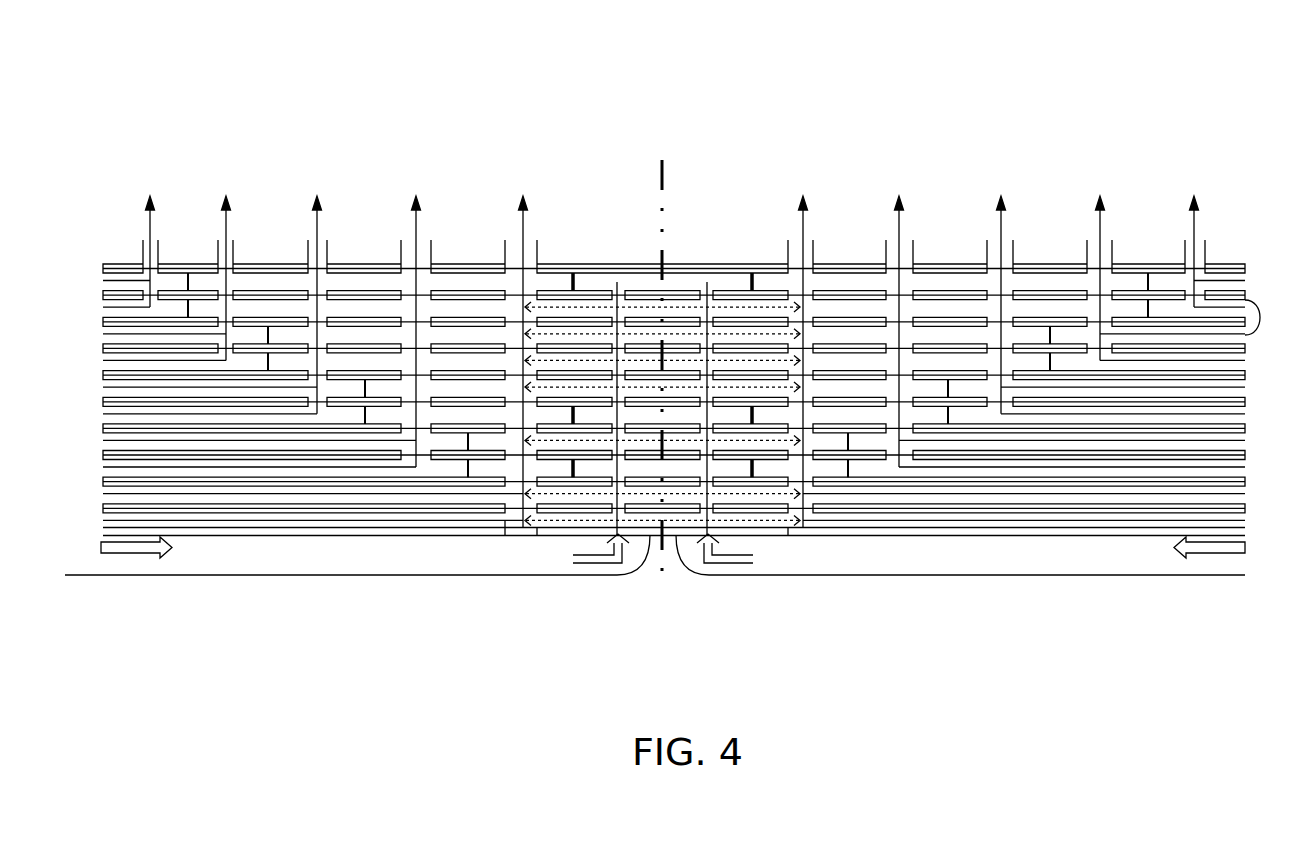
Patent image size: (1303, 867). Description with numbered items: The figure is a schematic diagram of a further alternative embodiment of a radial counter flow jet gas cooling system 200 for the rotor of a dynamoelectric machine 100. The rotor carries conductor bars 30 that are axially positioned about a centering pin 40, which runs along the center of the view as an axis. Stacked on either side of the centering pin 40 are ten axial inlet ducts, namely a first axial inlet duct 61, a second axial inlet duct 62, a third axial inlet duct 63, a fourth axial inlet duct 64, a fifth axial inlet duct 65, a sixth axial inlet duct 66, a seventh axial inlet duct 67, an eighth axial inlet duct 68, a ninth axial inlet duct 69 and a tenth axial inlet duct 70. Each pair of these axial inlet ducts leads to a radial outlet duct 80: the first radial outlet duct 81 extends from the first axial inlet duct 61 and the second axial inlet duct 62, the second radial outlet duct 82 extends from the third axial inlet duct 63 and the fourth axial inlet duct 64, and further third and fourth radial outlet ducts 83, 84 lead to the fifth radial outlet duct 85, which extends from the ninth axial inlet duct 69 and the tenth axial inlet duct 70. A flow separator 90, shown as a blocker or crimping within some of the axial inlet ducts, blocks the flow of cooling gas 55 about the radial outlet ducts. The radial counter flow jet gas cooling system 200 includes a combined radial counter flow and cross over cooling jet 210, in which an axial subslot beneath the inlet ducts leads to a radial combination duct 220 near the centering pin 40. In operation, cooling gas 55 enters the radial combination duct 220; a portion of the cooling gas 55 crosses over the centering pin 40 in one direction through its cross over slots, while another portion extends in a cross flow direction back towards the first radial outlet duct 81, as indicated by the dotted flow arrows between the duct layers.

The dynamoelectric machine 100 is at (98, 76).
The centering pin 40 is at (662, 170).
The radial combination duct 220 is at (617, 340).
The fifth radial outlet duct 85 is at (150, 226).
The fourth radial outlet duct 84 is at (226, 226).
The third radial outlet duct 83 is at (317, 226).
The second radial outlet duct 82 is at (416, 226).
The first radial outlet duct 81 is at (523, 226).
The flow separator 90 is at (1148, 283).
The cooling gas 55 is at (1194, 238).
The conductor bars 30 is at (1260, 318).
The tenth axial inlet duct 70 is at (103, 280).
The ninth axial inlet duct 69 is at (103, 307).
The eighth axial inlet duct 68 is at (103, 334).
The seventh axial inlet duct 67 is at (103, 360).
The sixth axial inlet duct 66 is at (103, 387).
The fifth axial inlet duct 65 is at (103, 414).
The fourth axial inlet duct 64 is at (103, 440).
The third axial inlet duct 63 is at (103, 467).
The second axial inlet duct 62 is at (103, 494).
The first axial inlet duct 61 is at (103, 520).
The radial outlet duct 80 is at (512, 527).
The radial counter flow jet gas cooling system 200 is at (286, 574).
The combined radial counter flow and cross over cooling jet 210 is at (624, 582).